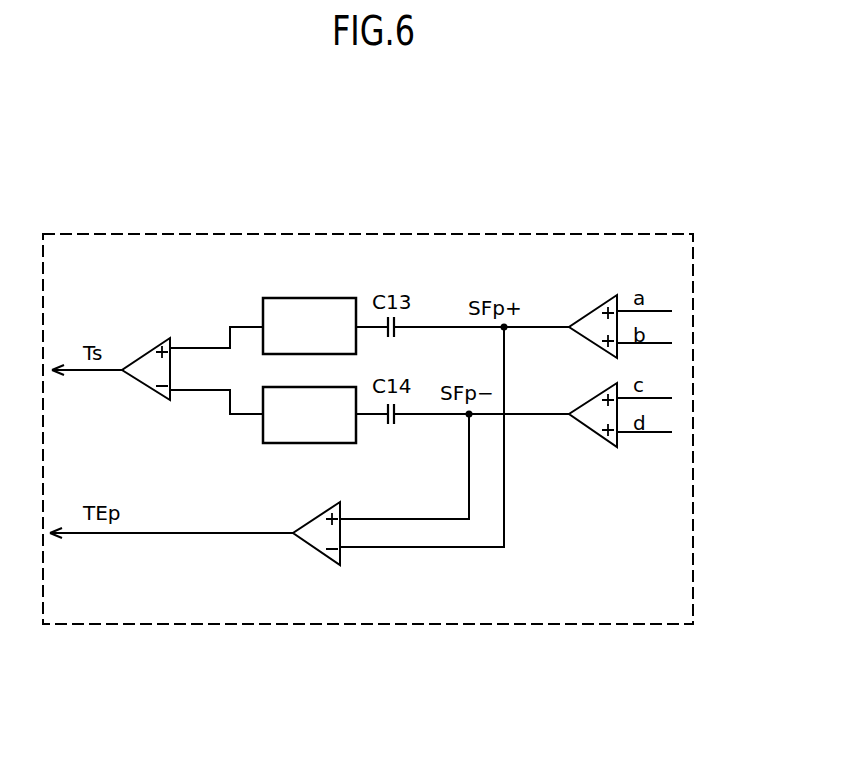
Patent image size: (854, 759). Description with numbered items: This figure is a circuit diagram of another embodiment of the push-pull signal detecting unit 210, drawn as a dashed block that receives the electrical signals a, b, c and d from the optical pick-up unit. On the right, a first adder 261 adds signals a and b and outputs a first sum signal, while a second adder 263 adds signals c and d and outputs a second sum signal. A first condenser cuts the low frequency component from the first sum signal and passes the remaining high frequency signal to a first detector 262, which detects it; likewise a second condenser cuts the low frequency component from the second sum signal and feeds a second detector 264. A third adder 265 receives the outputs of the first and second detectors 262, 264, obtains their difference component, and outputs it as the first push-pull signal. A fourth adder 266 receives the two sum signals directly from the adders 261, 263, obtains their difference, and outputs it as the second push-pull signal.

The push-pull signal detecting unit 210 is at (680, 485).
The first adder 261 is at (590, 341).
The first detector 262 is at (324, 298).
The second adder 263 is at (590, 428).
The second detector 264 is at (330, 444).
The third adder 265 is at (143, 383).
The fourth adder 266 is at (322, 553).